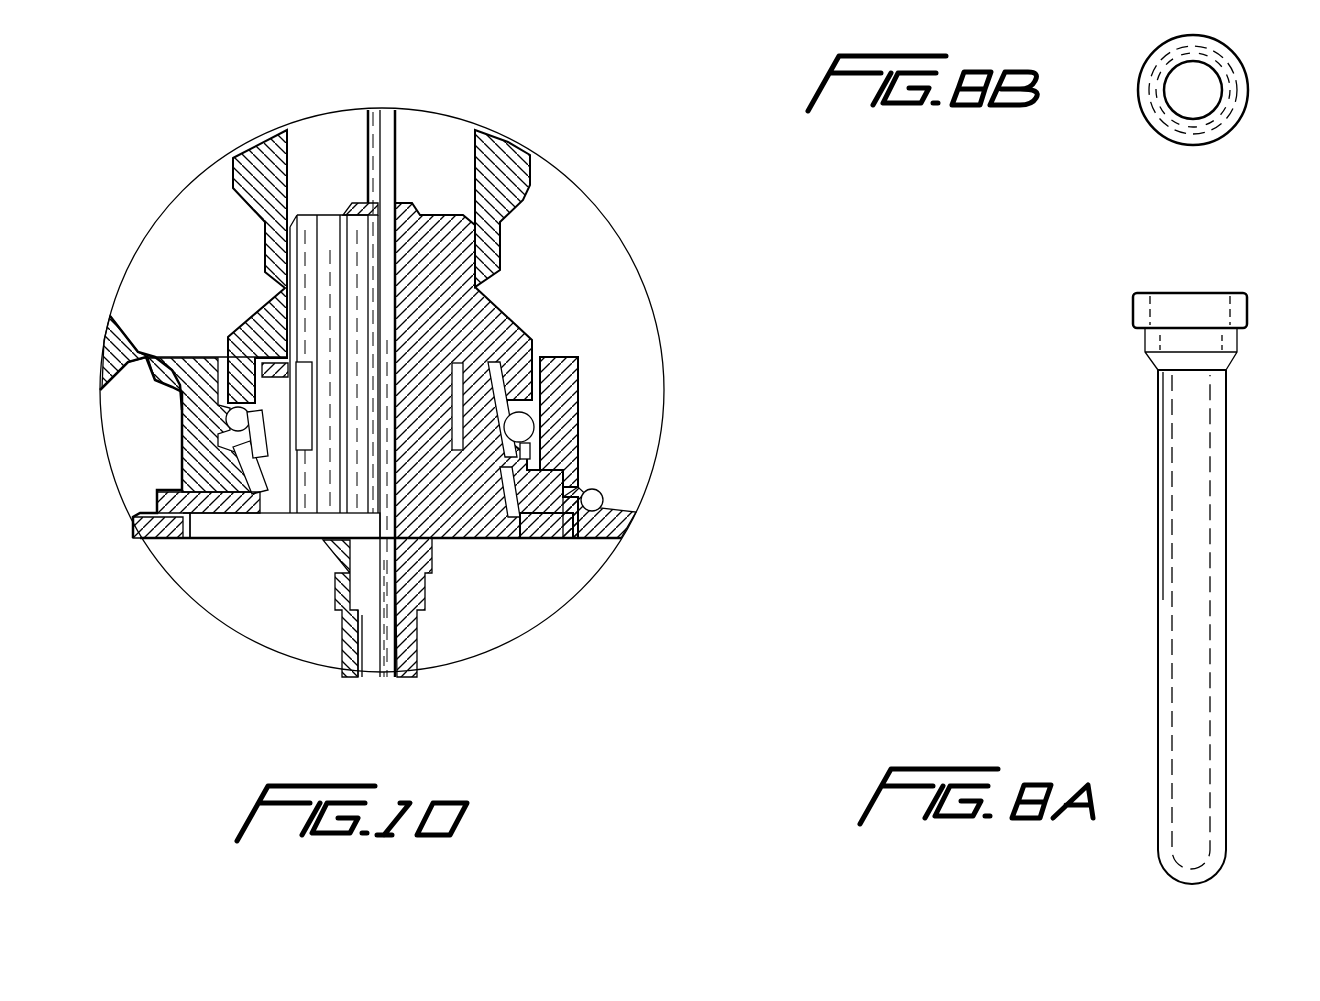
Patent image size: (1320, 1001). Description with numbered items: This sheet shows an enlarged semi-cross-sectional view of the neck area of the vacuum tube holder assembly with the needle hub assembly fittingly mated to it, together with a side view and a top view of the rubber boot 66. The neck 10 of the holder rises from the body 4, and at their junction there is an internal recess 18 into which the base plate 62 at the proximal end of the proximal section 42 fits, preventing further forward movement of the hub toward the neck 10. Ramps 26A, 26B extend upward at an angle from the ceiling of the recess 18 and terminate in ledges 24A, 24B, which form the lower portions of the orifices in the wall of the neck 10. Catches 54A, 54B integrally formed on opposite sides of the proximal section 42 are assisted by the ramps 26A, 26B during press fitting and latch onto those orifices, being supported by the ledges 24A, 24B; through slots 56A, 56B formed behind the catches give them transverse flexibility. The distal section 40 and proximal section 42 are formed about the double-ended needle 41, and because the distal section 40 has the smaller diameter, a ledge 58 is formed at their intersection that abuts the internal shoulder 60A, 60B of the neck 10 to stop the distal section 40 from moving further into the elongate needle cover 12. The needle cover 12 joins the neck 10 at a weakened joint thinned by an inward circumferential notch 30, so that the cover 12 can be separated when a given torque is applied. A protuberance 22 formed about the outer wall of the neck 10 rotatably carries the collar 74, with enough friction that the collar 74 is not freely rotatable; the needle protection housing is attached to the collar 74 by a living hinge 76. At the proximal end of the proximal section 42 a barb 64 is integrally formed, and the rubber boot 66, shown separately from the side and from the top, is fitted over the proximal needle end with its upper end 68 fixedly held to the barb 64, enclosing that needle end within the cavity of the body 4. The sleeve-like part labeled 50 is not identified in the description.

In FIG. 10, the body 4 is at (617, 530).
In FIG. 10, the neck 10 is at (237, 337).
In FIG. 10, the elongate needle cover 12 is at (530, 173).
In FIG. 10, the internal recess 18 is at (175, 540).
In FIG. 10, the protuberance 22 is at (532, 425).
In FIG. 10, the ledge 24A is at (240, 467).
In FIG. 10, the ledge 24B is at (600, 510).
In FIG. 10, the ramp 26A is at (250, 540).
In FIG. 10, the ramp 26B is at (567, 543).
In FIG. 10, the circumferential notch 30 is at (273, 280).
In FIG. 10, the distal section 40 is at (447, 263).
In FIG. 10, the double-ended needle 41 is at (386, 640).
In FIG. 10, the proximal section 42 is at (420, 427).
In FIG. 10, the sleeve 50 is at (318, 232).
In FIG. 10, the catch 54A is at (233, 428).
In FIG. 10, the catch 54B is at (528, 453).
In FIG. 10, the through slot 56A is at (290, 520).
In FIG. 10, the through slot 56B is at (463, 427).
In FIG. 10, the ledge 58 is at (480, 357).
In FIG. 10, the internal shoulder 60A is at (215, 492).
In FIG. 10, the internal shoulder 60B is at (535, 515).
In FIG. 10, the base plate 62 is at (195, 540).
In FIG. 10, the barb 64 is at (338, 600).
In FIG. 8B, the barb 64 is at (1143, 92).
In FIG. 10, the rubber boot 66 is at (418, 635).
In FIG. 8B, the rubber boot 66 is at (1233, 127).
In FIG. 8A, the rubber boot 66 is at (1158, 580).
In FIG. 8A, the upper end 68 is at (1250, 307).
In FIG. 10, the collar 74 is at (580, 408).
In FIG. 10, the living hinge 76 is at (125, 380).